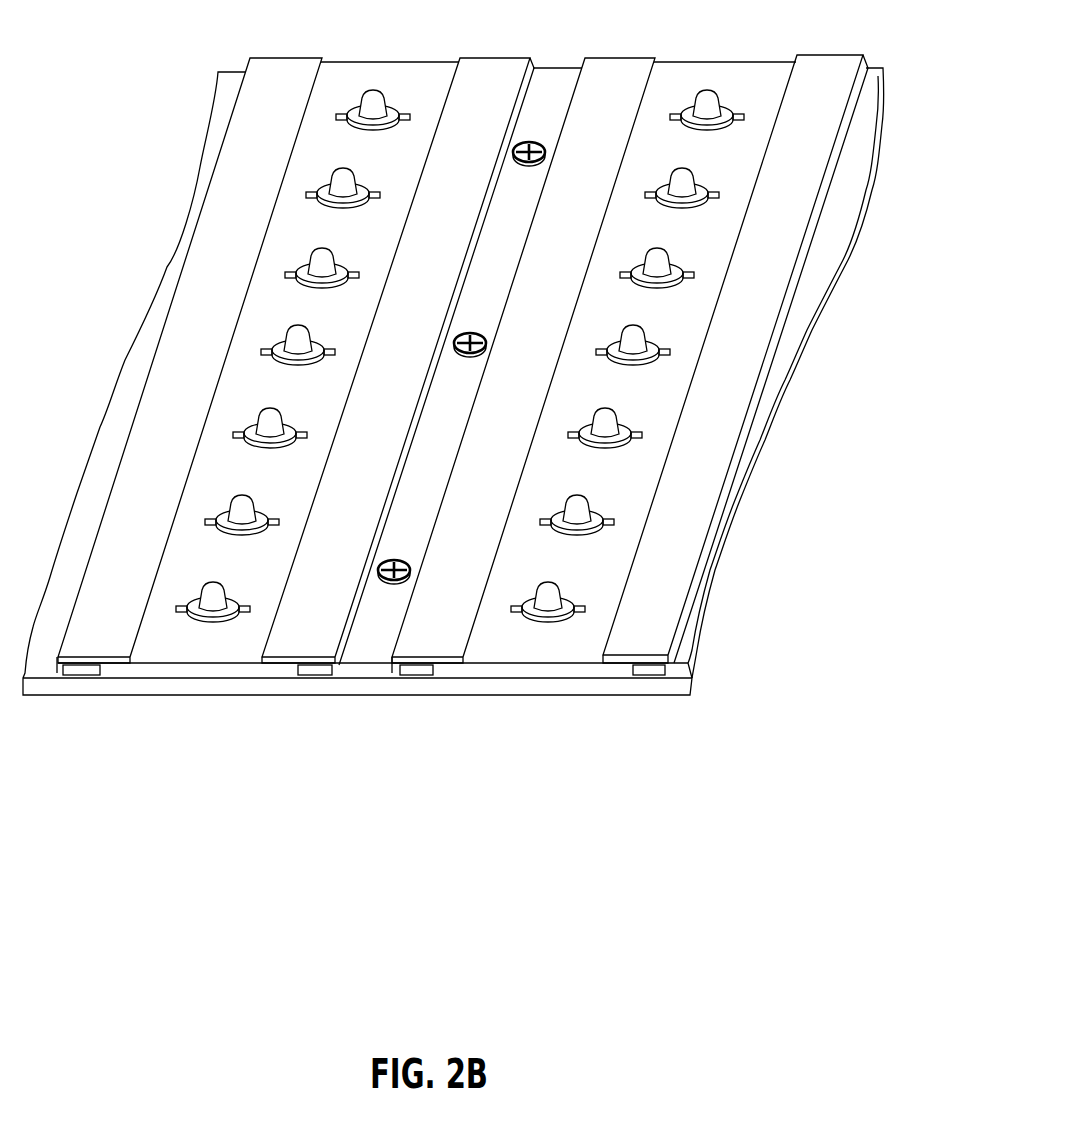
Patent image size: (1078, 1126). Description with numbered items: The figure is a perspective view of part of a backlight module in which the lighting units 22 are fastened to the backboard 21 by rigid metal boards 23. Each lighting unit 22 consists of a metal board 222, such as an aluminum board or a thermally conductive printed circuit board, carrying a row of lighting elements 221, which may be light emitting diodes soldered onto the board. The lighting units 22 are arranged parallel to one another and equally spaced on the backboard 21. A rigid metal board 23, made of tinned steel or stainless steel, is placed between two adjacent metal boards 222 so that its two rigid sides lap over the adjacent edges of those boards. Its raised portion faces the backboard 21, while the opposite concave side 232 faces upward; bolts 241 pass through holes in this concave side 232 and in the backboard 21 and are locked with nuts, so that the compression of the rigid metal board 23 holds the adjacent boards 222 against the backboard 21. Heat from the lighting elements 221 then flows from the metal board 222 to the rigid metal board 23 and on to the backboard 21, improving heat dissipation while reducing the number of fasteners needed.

The backboard 21 is at (110, 687).
The lighting unit 22 is at (444, 384).
The lighting element 221 is at (553, 592).
The metal board 222 is at (573, 672).
The rigid metal board 23 is at (285, 75).
The concave side 232 is at (327, 668).
The bolt 241 is at (538, 143).